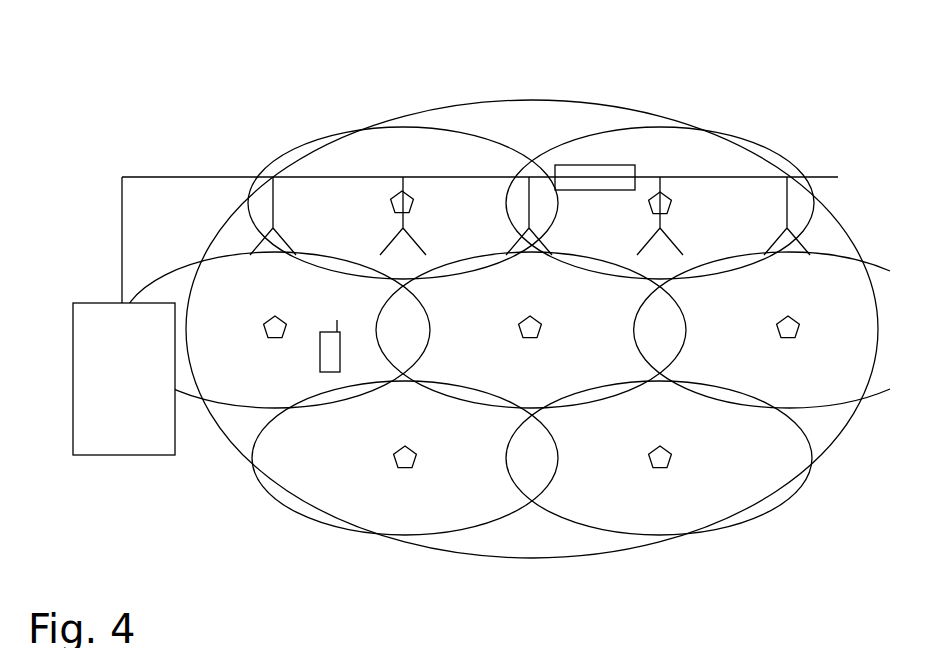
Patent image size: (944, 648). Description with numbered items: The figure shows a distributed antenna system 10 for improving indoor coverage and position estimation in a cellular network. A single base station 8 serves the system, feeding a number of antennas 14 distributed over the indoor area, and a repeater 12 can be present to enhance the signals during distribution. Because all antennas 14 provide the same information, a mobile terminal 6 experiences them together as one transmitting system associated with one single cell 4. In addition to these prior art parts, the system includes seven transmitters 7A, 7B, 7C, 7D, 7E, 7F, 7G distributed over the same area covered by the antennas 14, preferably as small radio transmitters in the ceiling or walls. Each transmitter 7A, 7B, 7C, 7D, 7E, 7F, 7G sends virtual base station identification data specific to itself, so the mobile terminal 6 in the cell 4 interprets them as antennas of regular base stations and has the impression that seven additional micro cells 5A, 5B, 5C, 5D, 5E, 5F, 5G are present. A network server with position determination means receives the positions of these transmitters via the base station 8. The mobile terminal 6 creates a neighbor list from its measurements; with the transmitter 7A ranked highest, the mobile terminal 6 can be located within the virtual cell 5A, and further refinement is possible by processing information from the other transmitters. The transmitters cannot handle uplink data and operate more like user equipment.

The wireless communication system 10 is at (168, 119).
The cell 4 is at (530, 558).
The virtual cell 5A is at (205, 266).
The virtual micro cell 5B is at (363, 143).
The virtual micro cell 5C is at (692, 138).
The virtual micro cell 5D is at (862, 383).
The virtual micro cell 5E is at (693, 530).
The virtual micro cell 5F is at (383, 520).
The virtual micro cell 5G is at (481, 390).
The transmitter 7A is at (275, 333).
The transmitter 7B is at (391, 203).
The transmitter 7C is at (661, 193).
The transmitter 7D is at (789, 333).
The transmitter 7E is at (661, 462).
The transmitter 7F is at (406, 462).
The transmitter 7G is at (531, 333).
The antenna 14 is at (276, 216).
The repeater 12 is at (588, 167).
The mobile terminal 6 is at (339, 357).
The base station 8 is at (160, 435).